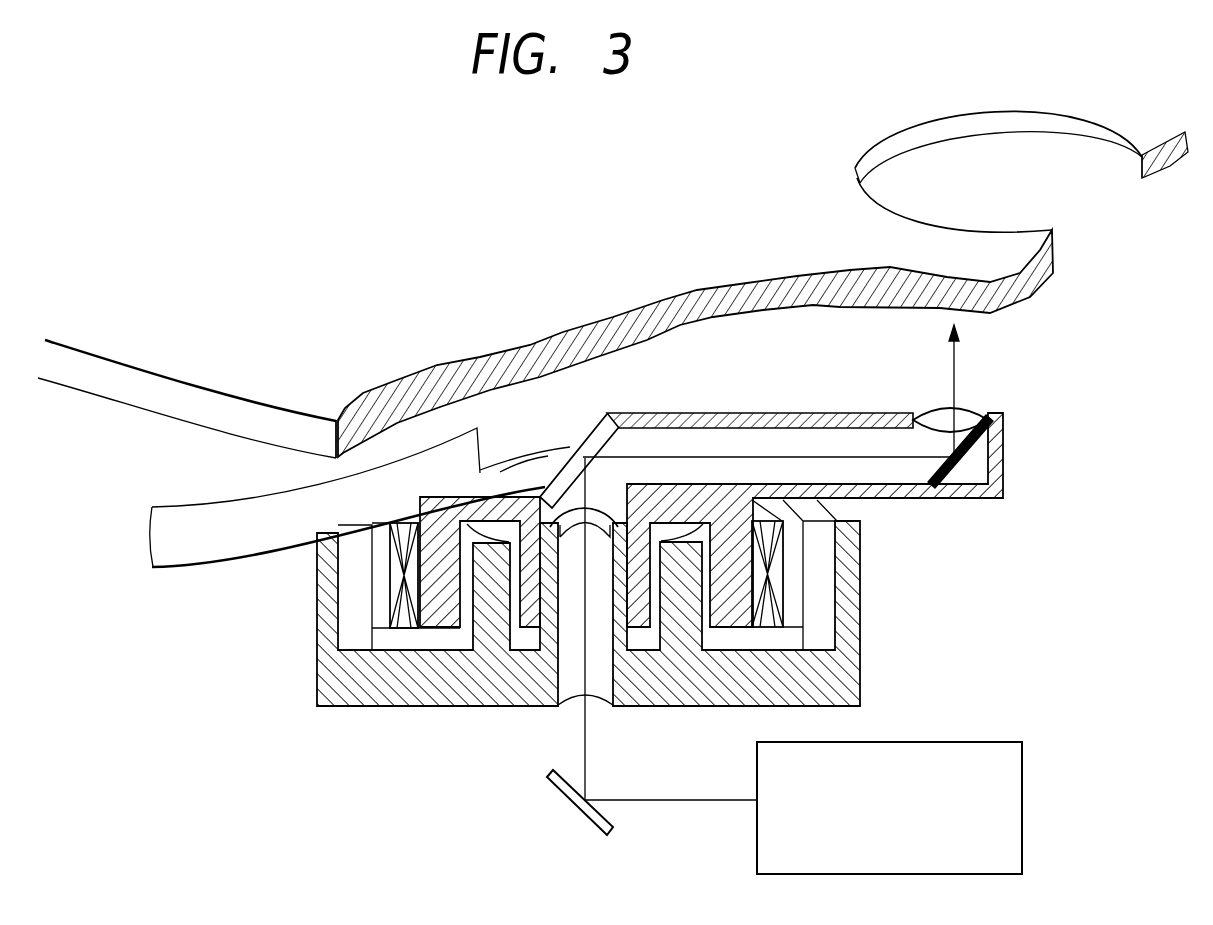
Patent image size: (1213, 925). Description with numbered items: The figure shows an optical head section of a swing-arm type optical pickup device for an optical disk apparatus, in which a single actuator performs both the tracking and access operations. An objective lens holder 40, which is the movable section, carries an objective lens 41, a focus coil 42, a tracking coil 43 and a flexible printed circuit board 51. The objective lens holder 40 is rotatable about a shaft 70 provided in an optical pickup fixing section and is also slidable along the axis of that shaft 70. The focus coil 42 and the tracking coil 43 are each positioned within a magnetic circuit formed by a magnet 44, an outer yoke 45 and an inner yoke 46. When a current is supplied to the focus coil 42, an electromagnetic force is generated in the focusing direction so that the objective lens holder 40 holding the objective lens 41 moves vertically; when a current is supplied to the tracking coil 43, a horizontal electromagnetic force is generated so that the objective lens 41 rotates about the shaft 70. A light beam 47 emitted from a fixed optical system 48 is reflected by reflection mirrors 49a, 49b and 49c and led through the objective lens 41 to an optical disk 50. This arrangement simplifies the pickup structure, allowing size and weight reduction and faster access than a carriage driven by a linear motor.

The objective lens holder 40 is at (692, 417).
The objective lens 41 is at (973, 410).
The focus coil 42 is at (413, 630).
The tracking coil 43 is at (412, 628).
The magnet 44 is at (350, 623).
The outer yoke 45 is at (325, 597).
The inner yoke 46 is at (490, 643).
The light beam 47 is at (957, 387).
The fixed optical system 48 is at (1023, 778).
The reflection mirror 49a is at (570, 803).
The reflection mirror 49b is at (583, 442).
The reflection mirror 49c is at (973, 445).
The optical disk 50 is at (1033, 243).
The flexible printed circuit board 51 is at (188, 558).
The shaft 70 is at (597, 507).